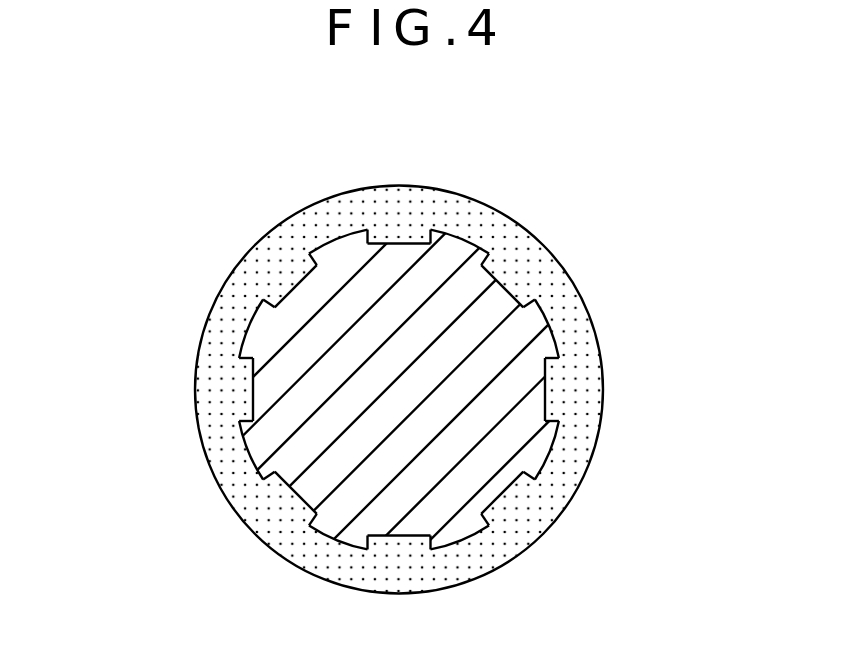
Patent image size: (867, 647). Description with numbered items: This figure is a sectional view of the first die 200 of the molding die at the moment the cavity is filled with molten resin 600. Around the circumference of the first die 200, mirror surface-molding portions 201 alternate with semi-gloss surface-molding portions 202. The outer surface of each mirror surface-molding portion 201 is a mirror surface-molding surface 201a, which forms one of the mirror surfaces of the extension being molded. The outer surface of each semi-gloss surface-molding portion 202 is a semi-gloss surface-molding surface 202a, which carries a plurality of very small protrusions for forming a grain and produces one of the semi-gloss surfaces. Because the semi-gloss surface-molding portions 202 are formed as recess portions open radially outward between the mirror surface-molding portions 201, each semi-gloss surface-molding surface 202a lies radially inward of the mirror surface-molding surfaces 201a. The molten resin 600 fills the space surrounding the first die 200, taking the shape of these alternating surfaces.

The first die 200 is at (503, 287).
The mirror surface-molding portion 201 is at (471, 238).
The mirror surface-molding surface 201a is at (481, 236).
The semi-gloss surface-molding portion 202 is at (391, 243).
The semi-gloss surface-molding surface 202a is at (408, 243).
The molten resin 600 is at (308, 232).